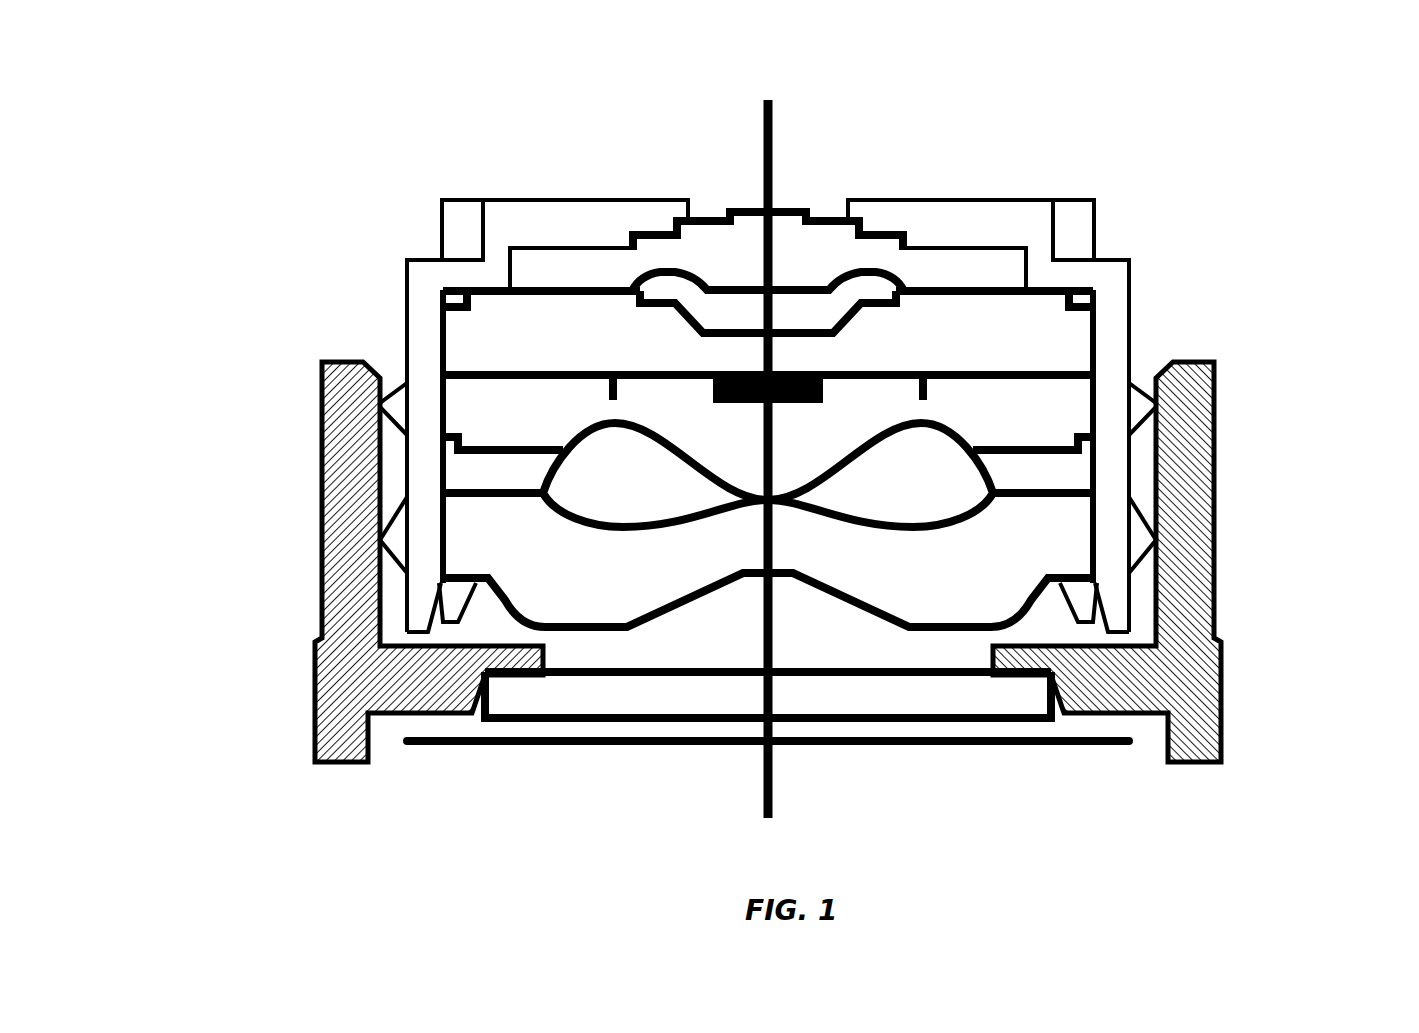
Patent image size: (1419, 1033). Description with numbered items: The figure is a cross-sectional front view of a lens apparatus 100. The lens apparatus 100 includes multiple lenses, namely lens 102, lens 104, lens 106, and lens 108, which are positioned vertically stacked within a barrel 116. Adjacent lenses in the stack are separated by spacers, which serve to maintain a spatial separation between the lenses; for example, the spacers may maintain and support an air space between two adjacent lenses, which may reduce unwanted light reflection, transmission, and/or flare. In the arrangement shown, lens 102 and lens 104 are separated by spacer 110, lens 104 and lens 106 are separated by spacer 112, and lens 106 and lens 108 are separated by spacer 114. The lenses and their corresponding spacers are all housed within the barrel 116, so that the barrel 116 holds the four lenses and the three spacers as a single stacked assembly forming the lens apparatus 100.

The lens apparatus 100 is at (385, 143).
The lens 102 is at (985, 270).
The lens 104 is at (475, 340).
The lens 106 is at (462, 410).
The lens 108 is at (472, 552).
The spacer 110 is at (1040, 287).
The spacer 112 is at (1040, 372).
The spacer 114 is at (475, 477).
The barrel 116 is at (1005, 215).